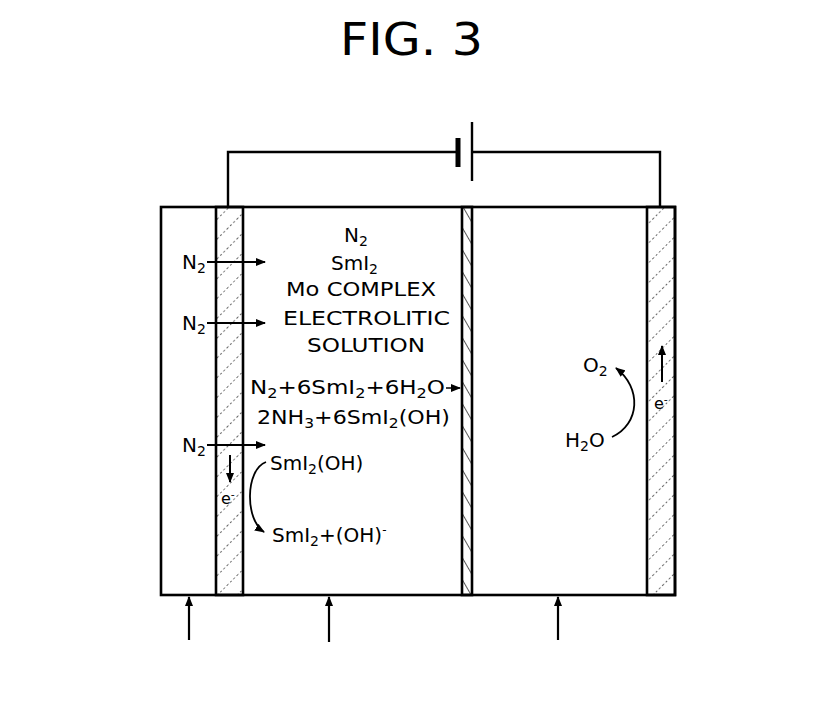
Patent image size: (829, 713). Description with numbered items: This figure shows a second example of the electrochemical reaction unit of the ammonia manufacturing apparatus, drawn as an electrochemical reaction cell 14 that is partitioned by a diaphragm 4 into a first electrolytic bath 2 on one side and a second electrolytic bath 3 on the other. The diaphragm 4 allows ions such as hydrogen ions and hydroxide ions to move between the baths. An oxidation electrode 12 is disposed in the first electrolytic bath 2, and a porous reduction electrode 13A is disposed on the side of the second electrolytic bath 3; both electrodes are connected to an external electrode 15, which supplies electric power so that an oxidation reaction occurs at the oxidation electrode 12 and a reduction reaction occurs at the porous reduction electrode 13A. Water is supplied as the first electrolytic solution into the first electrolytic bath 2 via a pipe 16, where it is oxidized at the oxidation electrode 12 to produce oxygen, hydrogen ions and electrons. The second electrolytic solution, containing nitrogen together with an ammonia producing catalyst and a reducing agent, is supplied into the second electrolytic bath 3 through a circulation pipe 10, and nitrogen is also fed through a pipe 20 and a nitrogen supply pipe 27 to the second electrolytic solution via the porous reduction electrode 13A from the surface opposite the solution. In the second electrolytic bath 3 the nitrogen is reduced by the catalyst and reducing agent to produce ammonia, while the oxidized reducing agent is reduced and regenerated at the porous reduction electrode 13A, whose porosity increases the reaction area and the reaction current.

The electrochemical reaction cell 14 is at (686, 210).
The second electrolytic bath 3 is at (272, 246).
The nitrogen supply pipe 27 is at (188, 490).
The porous reduction electrode 13A is at (225, 300).
The diaphragm 4 is at (470, 556).
The oxidation electrode 12 is at (668, 311).
The first electrolytic bath 2 is at (633, 265).
The external electrode 15 is at (476, 143).
The pipe 20 is at (186, 625).
The circulation pipe 10 is at (327, 620).
The pipe 16 is at (560, 618).